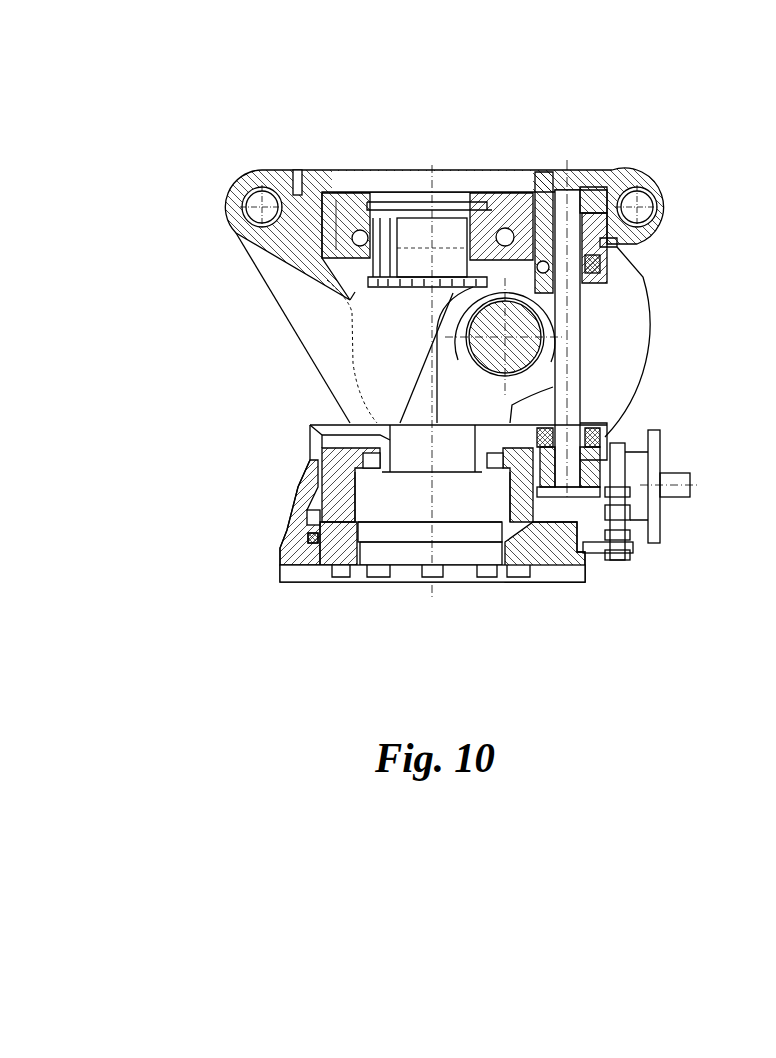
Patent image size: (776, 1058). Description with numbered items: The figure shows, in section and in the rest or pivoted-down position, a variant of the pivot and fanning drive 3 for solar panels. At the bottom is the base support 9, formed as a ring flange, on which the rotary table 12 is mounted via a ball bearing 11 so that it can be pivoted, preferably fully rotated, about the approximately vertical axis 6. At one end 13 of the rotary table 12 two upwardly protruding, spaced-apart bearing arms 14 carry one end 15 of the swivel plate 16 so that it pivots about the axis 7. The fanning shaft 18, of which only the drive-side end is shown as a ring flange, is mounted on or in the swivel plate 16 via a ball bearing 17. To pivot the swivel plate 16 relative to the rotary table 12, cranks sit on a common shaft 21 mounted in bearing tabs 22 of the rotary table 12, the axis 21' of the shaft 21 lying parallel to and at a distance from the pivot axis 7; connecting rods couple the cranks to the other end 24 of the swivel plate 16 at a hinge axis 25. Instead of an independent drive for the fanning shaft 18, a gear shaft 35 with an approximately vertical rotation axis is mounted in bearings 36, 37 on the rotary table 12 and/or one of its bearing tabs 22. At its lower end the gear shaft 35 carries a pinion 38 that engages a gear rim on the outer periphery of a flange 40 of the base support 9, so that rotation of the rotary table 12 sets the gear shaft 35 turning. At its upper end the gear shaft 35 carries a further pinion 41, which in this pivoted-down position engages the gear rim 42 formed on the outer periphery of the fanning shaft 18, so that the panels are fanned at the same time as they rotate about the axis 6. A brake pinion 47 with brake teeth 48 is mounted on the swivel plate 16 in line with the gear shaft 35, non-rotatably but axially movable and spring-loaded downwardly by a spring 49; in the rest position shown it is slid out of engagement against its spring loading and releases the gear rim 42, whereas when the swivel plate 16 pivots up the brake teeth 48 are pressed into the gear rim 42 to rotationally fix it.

The pivot and fanning drive 3 is at (218, 605).
The axis 6 is at (433, 507).
The axis 7 is at (258, 203).
The base support 9 is at (338, 555).
The ball bearing 11 is at (316, 538).
The rotary table 12 is at (300, 505).
The end of the rotary table 13 is at (300, 418).
The bearing arms 14 is at (290, 305).
The end of the swivel plate 15 is at (258, 168).
The swivel plate 16 is at (606, 180).
The ball bearing 17 is at (357, 231).
The fanning shaft 18 is at (532, 213).
The shaft 21 is at (495, 337).
The axis of the shaft 21' is at (550, 337).
The bearing tabs 22 is at (425, 383).
The end of the swivel plate 24 is at (662, 168).
The hinge axis 25 is at (640, 208).
The gear shaft 35 is at (568, 377).
The bearing 36 is at (605, 443).
The bearing 37 is at (613, 244).
The pinion 38 is at (586, 470).
The flange 40 is at (345, 507).
The further pinion 41 is at (603, 240).
The gear rim 42 is at (530, 200).
The brake pinion 47 is at (595, 206).
The brake teeth 48 is at (548, 204).
The spring 49 is at (590, 198).